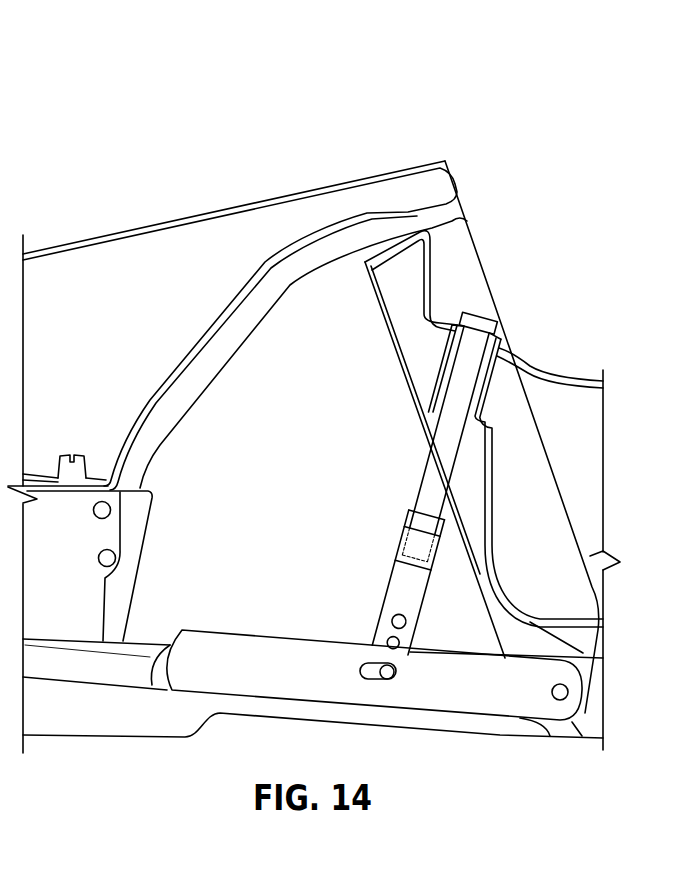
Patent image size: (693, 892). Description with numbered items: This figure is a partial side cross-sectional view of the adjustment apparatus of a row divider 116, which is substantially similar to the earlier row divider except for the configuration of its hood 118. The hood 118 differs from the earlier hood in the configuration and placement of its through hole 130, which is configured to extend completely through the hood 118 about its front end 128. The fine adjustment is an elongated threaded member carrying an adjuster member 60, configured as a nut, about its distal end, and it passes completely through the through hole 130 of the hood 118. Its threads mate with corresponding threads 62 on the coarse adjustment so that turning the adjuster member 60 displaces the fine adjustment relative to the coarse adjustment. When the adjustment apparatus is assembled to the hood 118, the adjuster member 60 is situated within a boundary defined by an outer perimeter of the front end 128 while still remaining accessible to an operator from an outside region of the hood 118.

The row divider 116 is at (234, 128).
The front end 128 is at (468, 258).
The adjuster member 60 is at (434, 460).
The threads 62 is at (428, 527).
The through hole 130 is at (483, 380).
The hood 118 is at (585, 440).